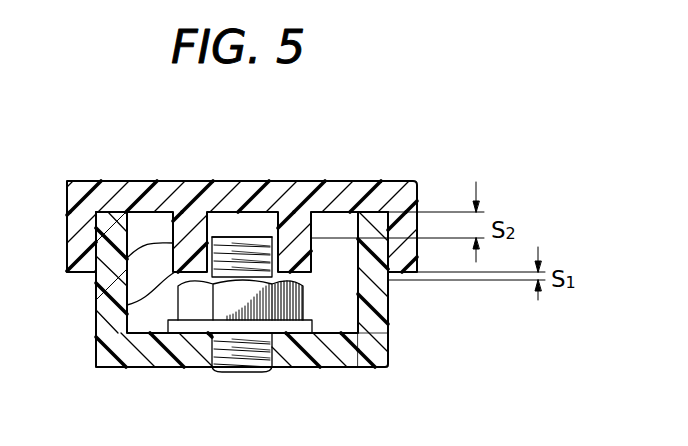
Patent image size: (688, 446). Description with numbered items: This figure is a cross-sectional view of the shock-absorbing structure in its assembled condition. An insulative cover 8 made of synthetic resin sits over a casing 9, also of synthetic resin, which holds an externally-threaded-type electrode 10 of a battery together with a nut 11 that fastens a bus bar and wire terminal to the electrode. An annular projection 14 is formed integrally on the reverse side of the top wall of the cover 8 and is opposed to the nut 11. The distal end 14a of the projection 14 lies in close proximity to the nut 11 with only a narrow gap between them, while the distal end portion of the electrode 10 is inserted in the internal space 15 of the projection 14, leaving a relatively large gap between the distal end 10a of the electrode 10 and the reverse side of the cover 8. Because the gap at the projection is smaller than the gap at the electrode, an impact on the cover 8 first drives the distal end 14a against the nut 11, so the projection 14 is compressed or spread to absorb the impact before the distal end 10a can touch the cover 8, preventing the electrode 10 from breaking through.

The insulative cover 8 is at (116, 177).
The casing 9 is at (389, 350).
The externally-threaded-type electrode 10 is at (233, 236).
The distal end of the electrode 10a is at (258, 236).
The nut 11 is at (303, 305).
The annular projection 14 is at (97, 278).
The distal end of the projection 14a is at (127, 305).
The internal space 15 is at (218, 218).